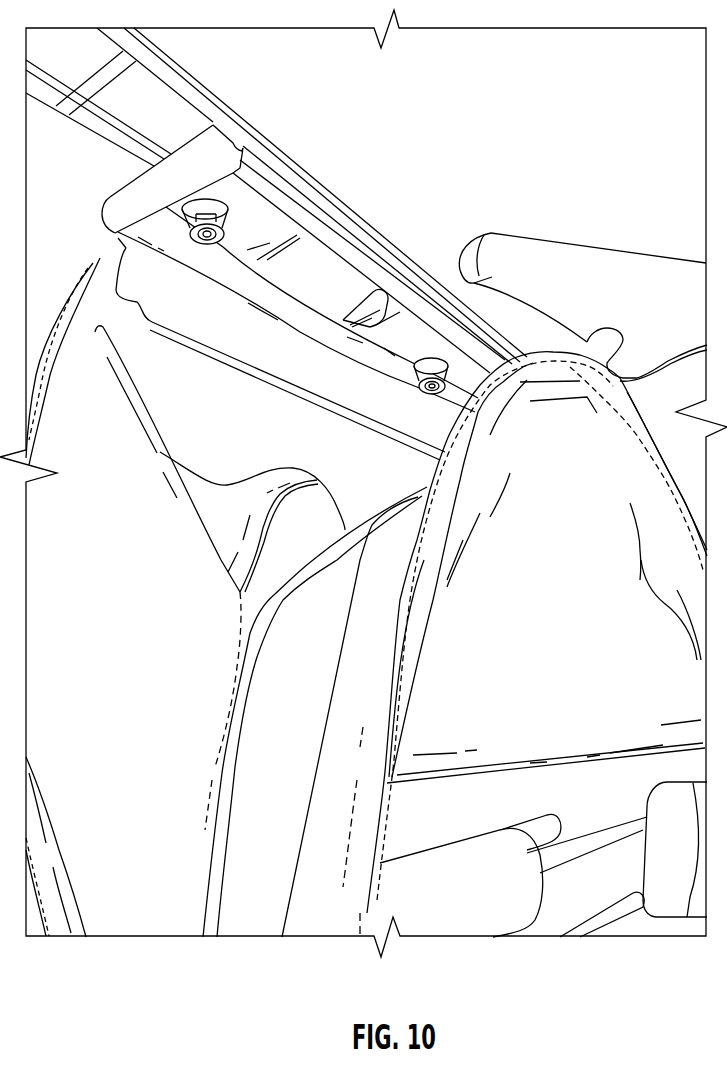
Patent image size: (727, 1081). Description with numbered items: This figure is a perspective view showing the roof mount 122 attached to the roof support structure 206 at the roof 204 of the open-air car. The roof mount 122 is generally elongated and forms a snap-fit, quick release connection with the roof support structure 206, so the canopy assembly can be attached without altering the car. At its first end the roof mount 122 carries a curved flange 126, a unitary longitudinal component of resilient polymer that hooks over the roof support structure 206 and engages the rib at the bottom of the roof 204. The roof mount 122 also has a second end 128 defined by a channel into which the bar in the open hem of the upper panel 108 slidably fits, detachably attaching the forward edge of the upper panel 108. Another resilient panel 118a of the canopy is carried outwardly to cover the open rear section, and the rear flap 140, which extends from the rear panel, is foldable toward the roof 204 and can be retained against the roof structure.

The roof 204 is at (536, 126).
The roof support structure 206 is at (253, 130).
The curved flange 126 is at (288, 173).
The second end 128 is at (99, 212).
The roof mount 122 is at (101, 168).
The upper panel 108 is at (265, 423).
The panel 118a is at (137, 685).
The rear flap 140 is at (558, 663).